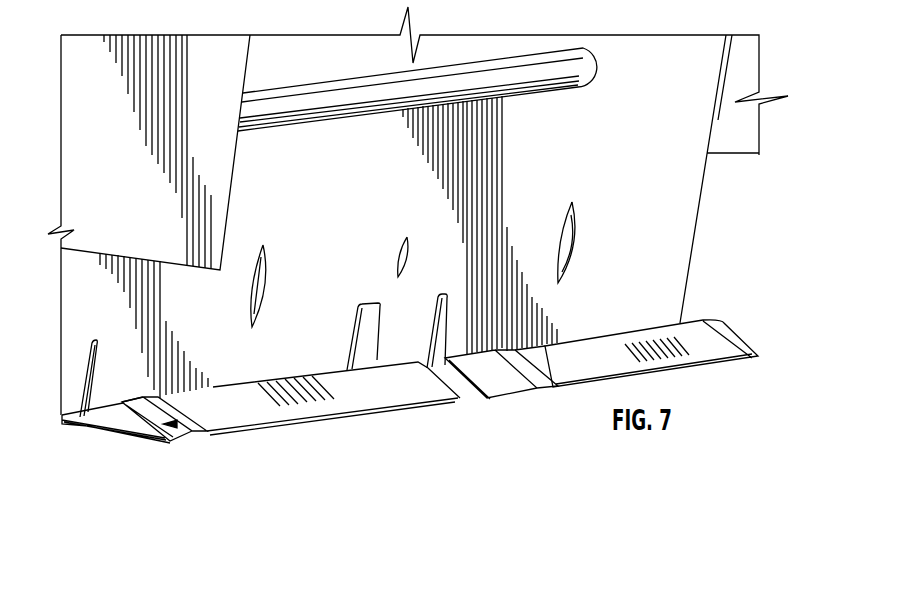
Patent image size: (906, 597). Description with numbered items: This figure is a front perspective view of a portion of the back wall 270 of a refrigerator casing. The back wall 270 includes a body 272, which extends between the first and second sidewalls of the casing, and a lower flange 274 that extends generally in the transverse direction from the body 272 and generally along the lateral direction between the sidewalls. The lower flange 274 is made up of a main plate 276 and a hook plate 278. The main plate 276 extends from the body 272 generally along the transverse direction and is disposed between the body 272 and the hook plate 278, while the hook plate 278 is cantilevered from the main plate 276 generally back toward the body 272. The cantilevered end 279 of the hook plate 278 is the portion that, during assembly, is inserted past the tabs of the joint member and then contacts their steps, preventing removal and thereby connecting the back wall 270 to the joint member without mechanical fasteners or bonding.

The back wall 270 is at (720, 117).
The body 272 is at (668, 205).
The lower flange 274 is at (748, 326).
The main plate 276 is at (90, 426).
The hook plate 278 is at (213, 430).
The cantilevered end 279 is at (137, 397).